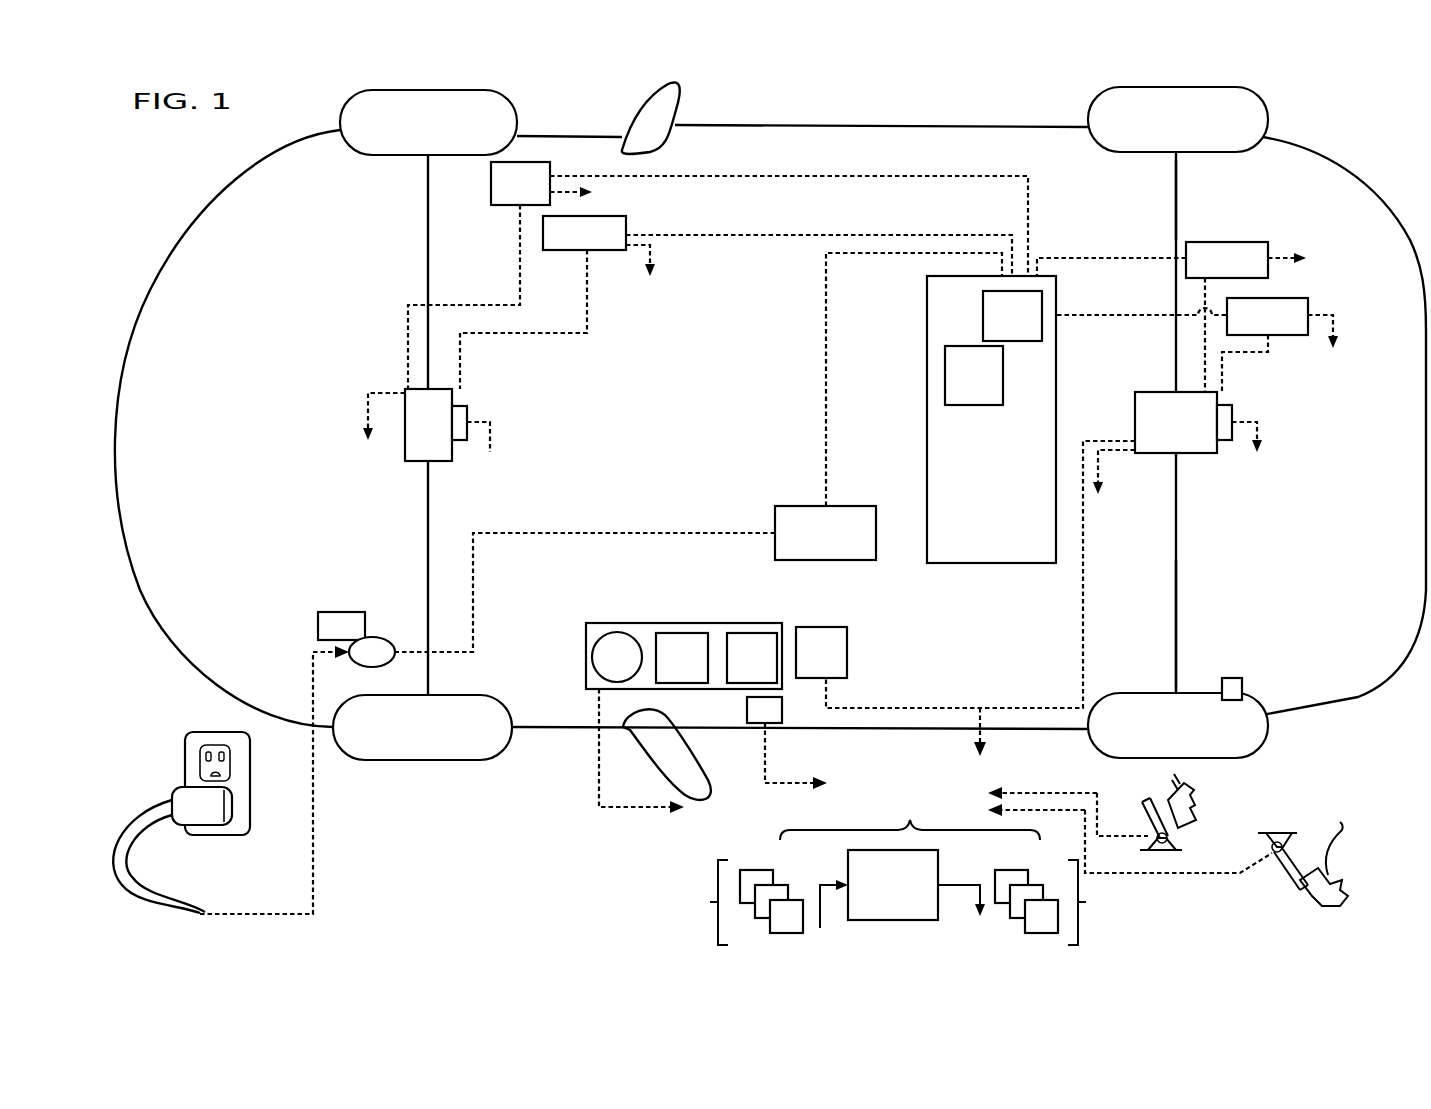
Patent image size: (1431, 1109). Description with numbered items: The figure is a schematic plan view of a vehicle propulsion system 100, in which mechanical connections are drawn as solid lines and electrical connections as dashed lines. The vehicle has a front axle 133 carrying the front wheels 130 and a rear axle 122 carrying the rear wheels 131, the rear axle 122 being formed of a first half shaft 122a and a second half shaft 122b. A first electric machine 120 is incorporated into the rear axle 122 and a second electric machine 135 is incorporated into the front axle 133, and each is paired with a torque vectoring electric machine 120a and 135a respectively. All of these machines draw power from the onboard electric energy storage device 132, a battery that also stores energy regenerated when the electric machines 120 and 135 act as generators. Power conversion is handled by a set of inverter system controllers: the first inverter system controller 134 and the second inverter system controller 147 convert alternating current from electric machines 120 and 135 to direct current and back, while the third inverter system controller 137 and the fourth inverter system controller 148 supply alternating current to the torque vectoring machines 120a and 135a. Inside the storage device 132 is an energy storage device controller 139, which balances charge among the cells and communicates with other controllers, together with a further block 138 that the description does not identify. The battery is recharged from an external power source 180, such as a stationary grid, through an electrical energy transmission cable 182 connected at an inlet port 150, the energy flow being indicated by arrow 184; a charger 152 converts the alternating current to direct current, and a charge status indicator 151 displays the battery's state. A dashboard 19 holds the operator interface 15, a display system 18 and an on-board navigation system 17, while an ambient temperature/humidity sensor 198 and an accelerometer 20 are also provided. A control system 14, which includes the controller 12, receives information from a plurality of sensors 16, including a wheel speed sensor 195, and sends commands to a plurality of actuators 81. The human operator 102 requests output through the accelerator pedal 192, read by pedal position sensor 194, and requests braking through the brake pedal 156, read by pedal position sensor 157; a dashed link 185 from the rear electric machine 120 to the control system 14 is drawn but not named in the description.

The controller 12 is at (1382, 720).
The control system 14 is at (1026, 822).
The operator interface 15 is at (638, 722).
The sensors 16 is at (744, 902).
The on-board navigation system 17 is at (752, 658).
The display system 18 is at (682, 658).
The dashboard 19 is at (712, 623).
The accelerometer 20 is at (787, 743).
The actuators 81 is at (1051, 902).
The vehicle propulsion system 100 is at (915, 100).
The human operator 102 is at (1176, 794).
The first electric machine 120 is at (1152, 468).
The torque vectoring electric machine 120a is at (1232, 410).
The rear axle 122 is at (1210, 224).
The first half shaft 122a is at (1177, 200).
The second half shaft 122b is at (1177, 621).
The front wheels 130 is at (440, 90).
The rear wheels 131 is at (1213, 87).
The electric energy storage device 132 is at (991, 419).
The front axle 133 is at (410, 499).
The first inverter system controller 134 is at (1185, 317).
The second electric machine 135 is at (403, 440).
The torque vectoring electric machine 135a is at (467, 410).
The third inverter system controller 137 is at (1193, 346).
The battery controller 138 is at (1012, 316).
The electric energy storage device controller 139 is at (974, 375).
The second inverter system controller 147 is at (718, 275).
The fourth inverter system controller 148 is at (736, 302).
The inlet port 150 is at (380, 637).
The charge status indicator 151 is at (341, 626).
The charger 152 is at (698, 452).
The brake pedal 156 is at (1302, 898).
The pedal position sensor 157 is at (1266, 842).
The power source 180 is at (185, 763).
The electrical energy transmission cable 182 is at (117, 826).
The arrow 184 is at (243, 914).
The communication link 185 is at (1032, 708).
The pedal 192 is at (1150, 818).
The pedal position sensor 194 is at (1168, 838).
The wheel speed sensor 195 is at (1232, 678).
The ambient temperature/humidity sensor 198 is at (821, 652).